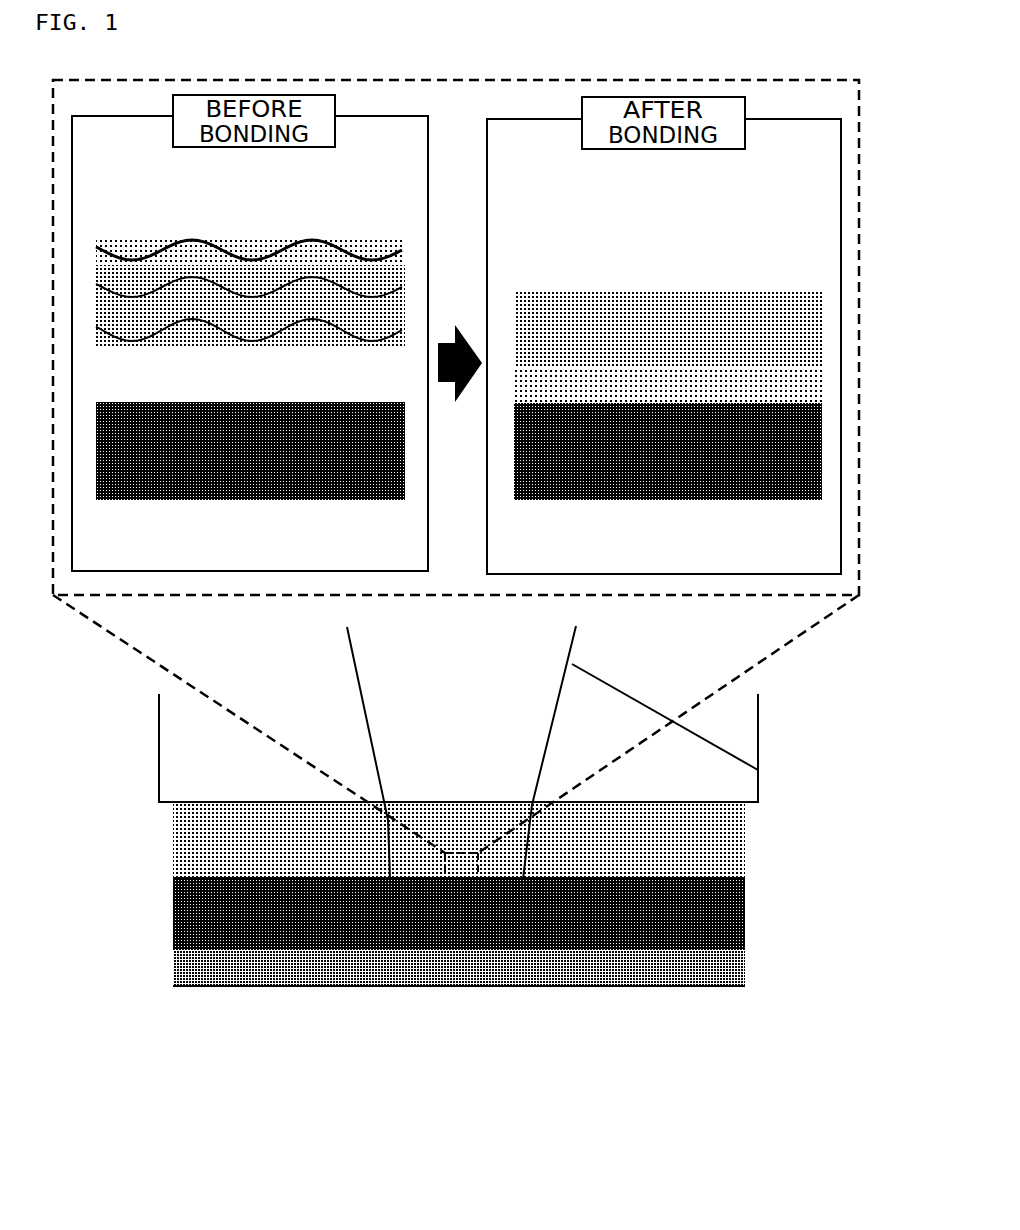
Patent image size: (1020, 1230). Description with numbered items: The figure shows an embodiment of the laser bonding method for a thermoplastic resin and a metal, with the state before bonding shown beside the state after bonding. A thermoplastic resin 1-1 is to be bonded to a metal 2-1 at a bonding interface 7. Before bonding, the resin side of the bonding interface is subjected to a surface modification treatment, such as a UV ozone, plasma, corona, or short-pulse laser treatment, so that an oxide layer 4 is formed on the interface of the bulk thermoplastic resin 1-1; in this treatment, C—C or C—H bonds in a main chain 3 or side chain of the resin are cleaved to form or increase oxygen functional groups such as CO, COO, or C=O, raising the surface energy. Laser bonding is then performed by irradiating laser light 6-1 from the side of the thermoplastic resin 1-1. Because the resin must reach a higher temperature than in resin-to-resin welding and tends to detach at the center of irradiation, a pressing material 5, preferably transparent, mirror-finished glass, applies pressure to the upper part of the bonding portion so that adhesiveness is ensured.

The thermoplastic resin 1-1 is at (135, 243).
The metal 2-1 is at (172, 487).
The main chain 3 is at (342, 247).
The oxide layer 4 is at (197, 347).
The pressing material 5 is at (158, 782).
The laser light 6-1 is at (764, 743).
The bonding interface 7 is at (523, 879).